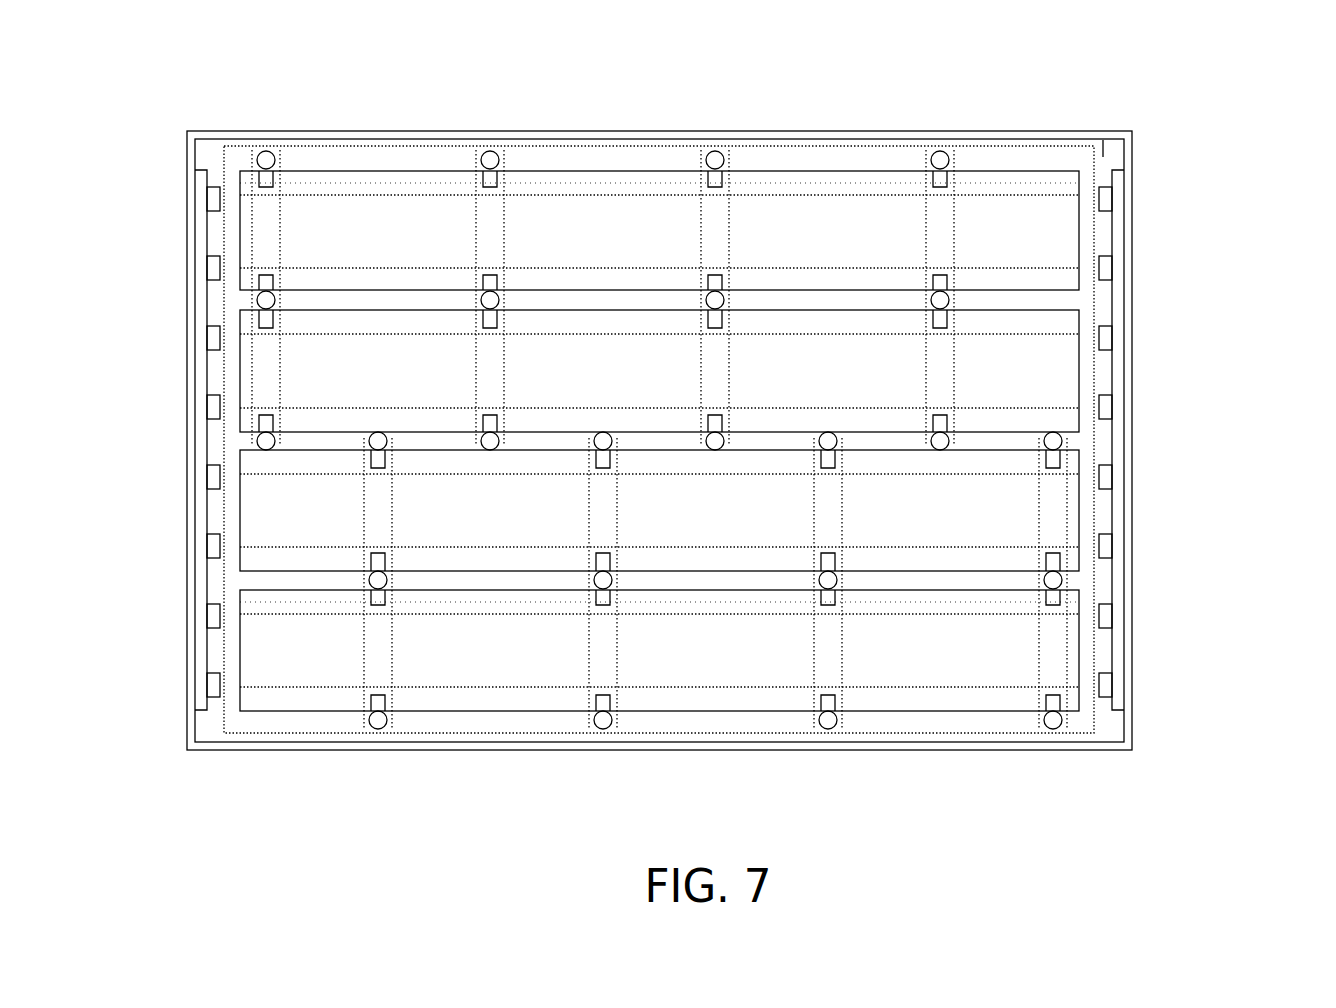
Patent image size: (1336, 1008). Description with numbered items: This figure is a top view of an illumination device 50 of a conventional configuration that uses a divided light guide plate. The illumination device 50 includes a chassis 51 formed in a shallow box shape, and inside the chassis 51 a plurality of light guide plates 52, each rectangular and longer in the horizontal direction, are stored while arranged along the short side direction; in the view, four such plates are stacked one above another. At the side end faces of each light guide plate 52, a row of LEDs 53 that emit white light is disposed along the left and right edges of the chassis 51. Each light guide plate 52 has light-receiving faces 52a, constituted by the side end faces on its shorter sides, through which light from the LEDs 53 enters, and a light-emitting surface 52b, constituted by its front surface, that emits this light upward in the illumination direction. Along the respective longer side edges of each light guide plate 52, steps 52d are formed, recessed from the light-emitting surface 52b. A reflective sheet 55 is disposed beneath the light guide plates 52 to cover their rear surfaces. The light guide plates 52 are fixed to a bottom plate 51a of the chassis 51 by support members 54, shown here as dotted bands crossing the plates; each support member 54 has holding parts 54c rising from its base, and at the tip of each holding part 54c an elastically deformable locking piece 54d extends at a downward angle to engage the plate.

The illumination device 50 is at (1222, 118).
The chassis 51 is at (1128, 325).
The bottom plate 51a is at (1103, 130).
The light guide plate 52 is at (665, 170).
The light-receiving face 52a is at (240, 226).
The light-emitting surface 52b is at (608, 222).
The step 52d is at (862, 182).
The LED 53 is at (208, 475).
The support member 54 is at (954, 224).
The holding part 54c is at (940, 151).
The locking piece 54d is at (930, 175).
The reflective sheet 55 is at (445, 146).